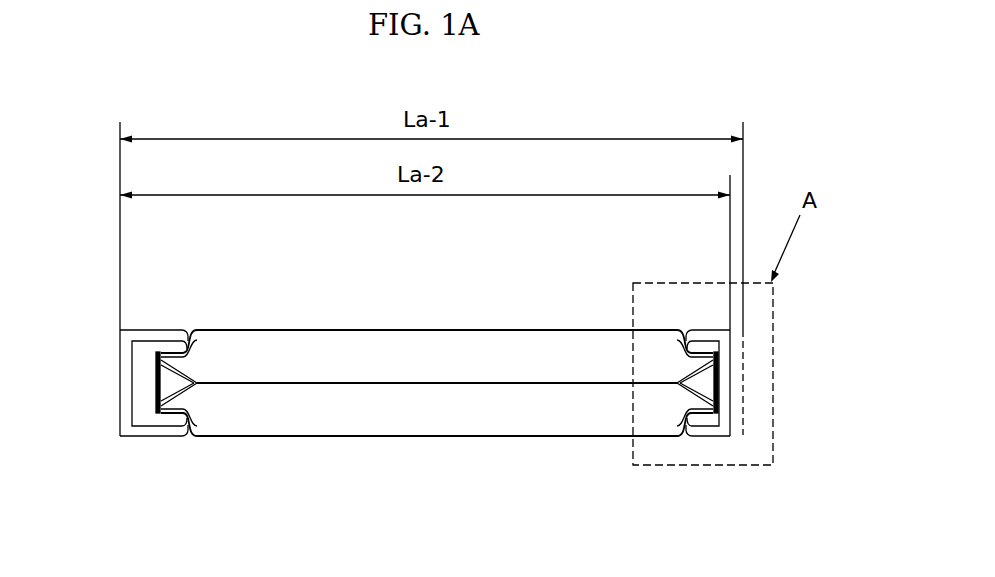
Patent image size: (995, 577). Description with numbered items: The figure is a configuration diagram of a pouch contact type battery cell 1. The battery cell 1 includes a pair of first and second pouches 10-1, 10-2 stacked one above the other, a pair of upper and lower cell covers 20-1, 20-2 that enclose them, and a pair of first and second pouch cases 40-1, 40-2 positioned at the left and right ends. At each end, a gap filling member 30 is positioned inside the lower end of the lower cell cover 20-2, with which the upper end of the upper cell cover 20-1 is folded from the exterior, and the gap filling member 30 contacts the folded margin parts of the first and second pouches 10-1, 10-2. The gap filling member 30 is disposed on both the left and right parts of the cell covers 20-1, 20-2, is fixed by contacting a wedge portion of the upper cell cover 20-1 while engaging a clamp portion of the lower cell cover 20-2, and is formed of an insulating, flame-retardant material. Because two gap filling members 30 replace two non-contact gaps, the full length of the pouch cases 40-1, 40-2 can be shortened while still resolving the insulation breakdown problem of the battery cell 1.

The pouch contact type battery cell 1 is at (437, 384).
The first pouch 10-1 is at (316, 357).
The second pouch 10-2 is at (353, 410).
The upper cell cover 20-1 is at (292, 330).
The lower cell cover 20-2 is at (500, 434).
The gap filling member 30 is at (157, 382).
The first pouch case 40-1 is at (703, 436).
The second pouch case 40-2 is at (168, 438).